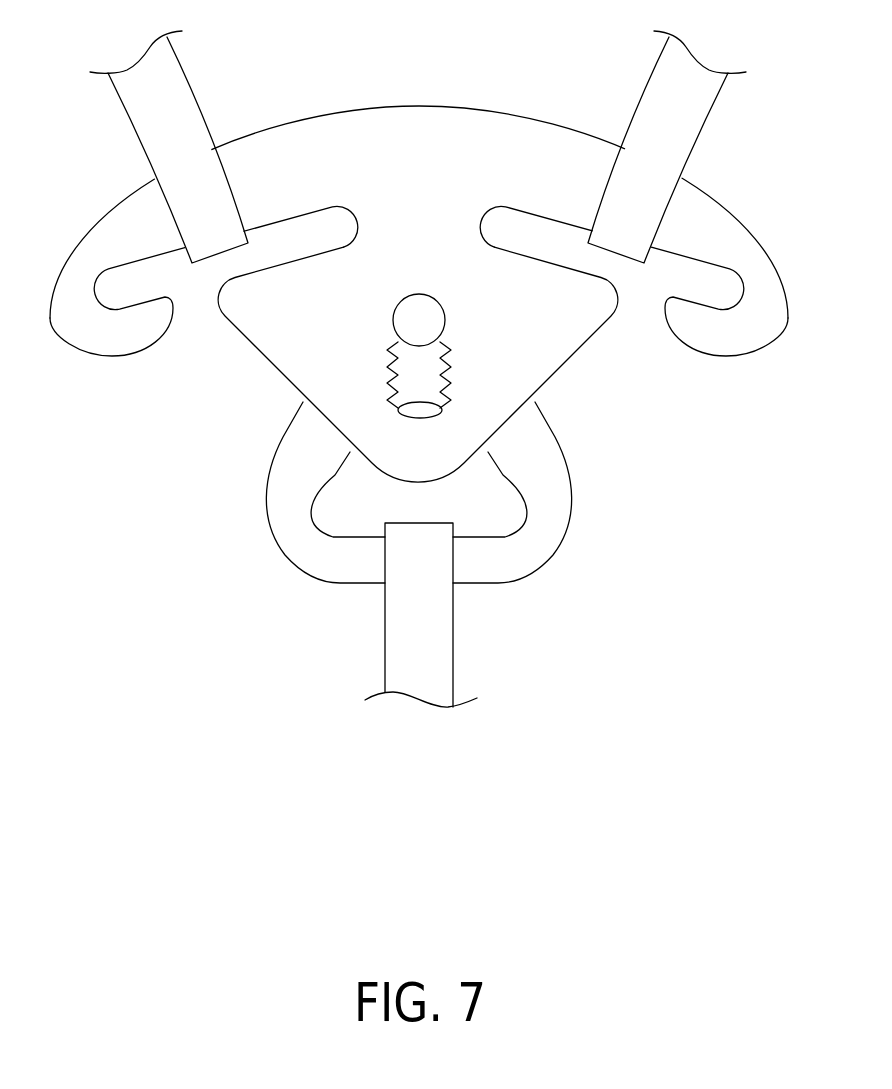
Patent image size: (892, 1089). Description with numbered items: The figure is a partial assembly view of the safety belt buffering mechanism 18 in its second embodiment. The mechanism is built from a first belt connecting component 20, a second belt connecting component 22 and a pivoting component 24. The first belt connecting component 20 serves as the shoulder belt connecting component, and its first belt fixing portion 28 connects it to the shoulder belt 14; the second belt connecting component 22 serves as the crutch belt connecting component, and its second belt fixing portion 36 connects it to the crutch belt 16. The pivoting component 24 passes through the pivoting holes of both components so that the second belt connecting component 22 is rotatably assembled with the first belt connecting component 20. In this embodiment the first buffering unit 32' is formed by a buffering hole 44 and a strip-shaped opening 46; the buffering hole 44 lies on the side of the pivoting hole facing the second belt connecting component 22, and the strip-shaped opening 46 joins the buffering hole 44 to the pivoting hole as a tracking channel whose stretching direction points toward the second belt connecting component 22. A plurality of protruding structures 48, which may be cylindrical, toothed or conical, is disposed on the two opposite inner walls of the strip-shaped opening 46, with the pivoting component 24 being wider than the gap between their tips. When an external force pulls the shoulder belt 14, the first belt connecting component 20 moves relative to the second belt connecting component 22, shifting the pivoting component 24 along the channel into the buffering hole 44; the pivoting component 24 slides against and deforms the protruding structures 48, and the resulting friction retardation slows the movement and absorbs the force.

The shoulder belt 14 is at (177, 98).
The crutch belt 16 is at (402, 641).
The safety belt buffering mechanism 18 is at (503, 455).
The first belt connecting component 20 is at (567, 337).
The second belt connecting component 22 is at (489, 532).
The pivoting component 24 is at (422, 312).
The first belt fixing portion 28 is at (122, 230).
The first buffering unit 32' is at (371, 415).
The second belt fixing portion 36 is at (522, 562).
The buffering hole 44 is at (408, 416).
The strip-shaped opening 46 is at (395, 396).
The protruding structures 48 is at (385, 357).